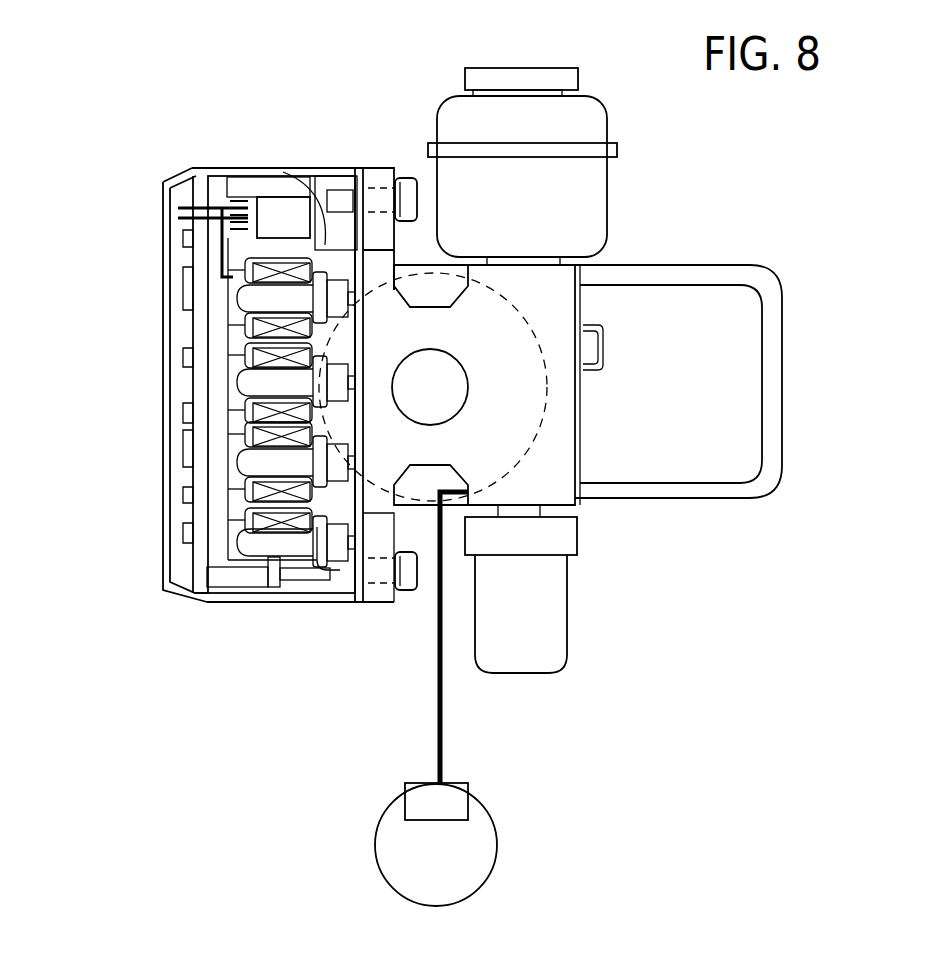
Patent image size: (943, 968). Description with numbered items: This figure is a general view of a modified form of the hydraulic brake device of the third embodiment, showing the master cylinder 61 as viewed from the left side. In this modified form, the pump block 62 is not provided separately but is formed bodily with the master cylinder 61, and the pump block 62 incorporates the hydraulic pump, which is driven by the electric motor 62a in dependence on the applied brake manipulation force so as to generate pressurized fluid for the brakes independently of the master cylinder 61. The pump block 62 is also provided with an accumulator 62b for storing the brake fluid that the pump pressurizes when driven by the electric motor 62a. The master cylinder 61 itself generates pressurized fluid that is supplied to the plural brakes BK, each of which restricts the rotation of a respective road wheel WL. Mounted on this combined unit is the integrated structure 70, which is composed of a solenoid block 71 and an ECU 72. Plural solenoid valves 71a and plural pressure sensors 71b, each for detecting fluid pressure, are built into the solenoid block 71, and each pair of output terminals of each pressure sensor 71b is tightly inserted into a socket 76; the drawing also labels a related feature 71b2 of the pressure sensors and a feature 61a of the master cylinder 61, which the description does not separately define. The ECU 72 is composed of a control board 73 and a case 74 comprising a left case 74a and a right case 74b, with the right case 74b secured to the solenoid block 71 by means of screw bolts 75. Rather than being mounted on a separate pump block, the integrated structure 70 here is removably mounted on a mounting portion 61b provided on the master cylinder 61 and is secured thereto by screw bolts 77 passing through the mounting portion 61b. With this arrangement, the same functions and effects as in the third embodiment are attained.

The master cylinder 61 is at (609, 72).
The reservoir connection port 61a is at (420, 277).
The mounting portion 61b is at (385, 513).
The pump block 62 is at (557, 424).
The electric motor 62a is at (744, 372).
The accumulator 62b is at (770, 400).
The integrated structure 70 is at (293, 437).
The solenoid block 71 is at (238, 663).
The solenoid valve 71a is at (247, 297).
The pressure sensor 71b is at (270, 205).
The connector channel 71b2 is at (262, 198).
The ECU 72 is at (275, 617).
The control board 73 is at (180, 320).
The case 74 is at (114, 363).
The left case 74a is at (160, 212).
The right case 74b is at (196, 160).
The screw bolt 75 is at (210, 576).
The socket 76 is at (234, 195).
The screw bolt 77 is at (405, 177).
The brake BK is at (462, 799).
The road wheel WL is at (493, 847).